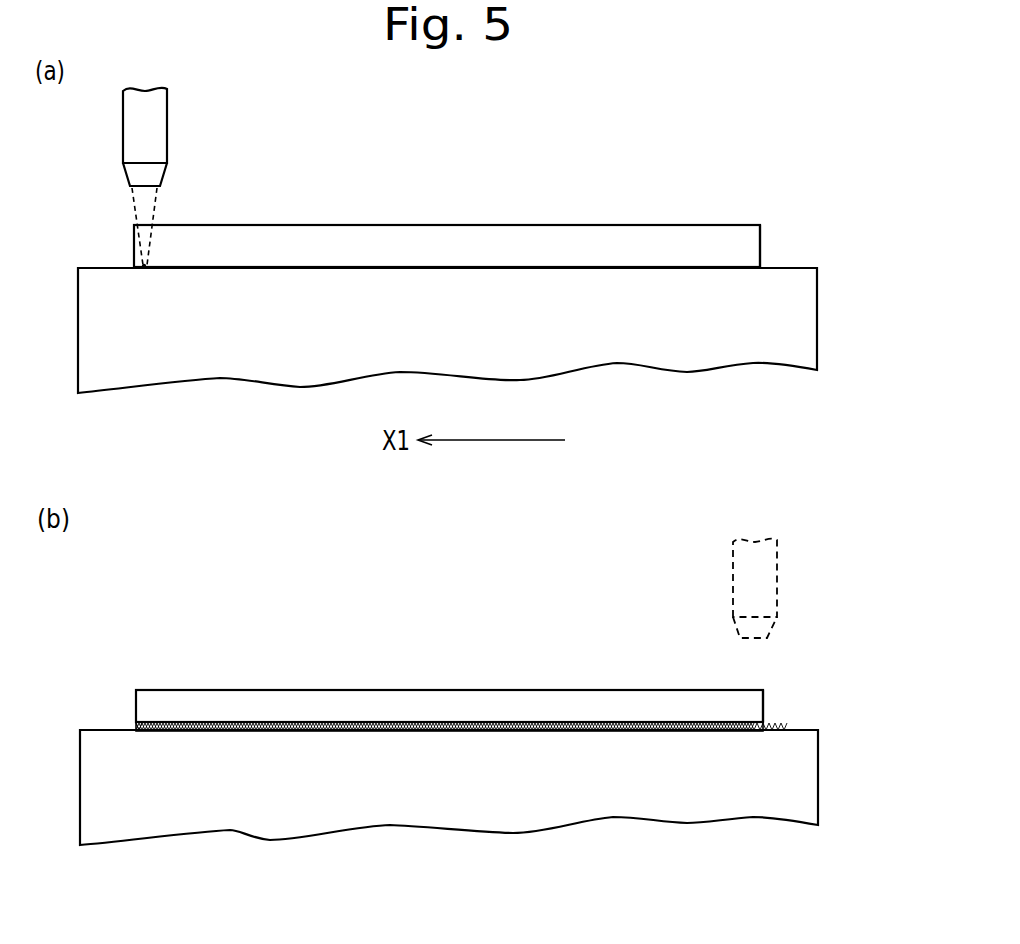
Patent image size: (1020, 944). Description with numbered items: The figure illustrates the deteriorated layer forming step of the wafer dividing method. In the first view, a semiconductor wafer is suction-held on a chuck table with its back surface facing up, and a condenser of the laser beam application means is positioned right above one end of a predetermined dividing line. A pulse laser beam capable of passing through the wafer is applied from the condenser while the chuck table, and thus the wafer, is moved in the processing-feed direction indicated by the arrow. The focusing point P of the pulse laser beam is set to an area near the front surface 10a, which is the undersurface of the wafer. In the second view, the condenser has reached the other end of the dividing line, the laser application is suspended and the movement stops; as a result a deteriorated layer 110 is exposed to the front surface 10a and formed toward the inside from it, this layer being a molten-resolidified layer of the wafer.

The front surface 10a is at (496, 732).
The deteriorated layer 110 is at (405, 722).
The focusing point P is at (134, 266).